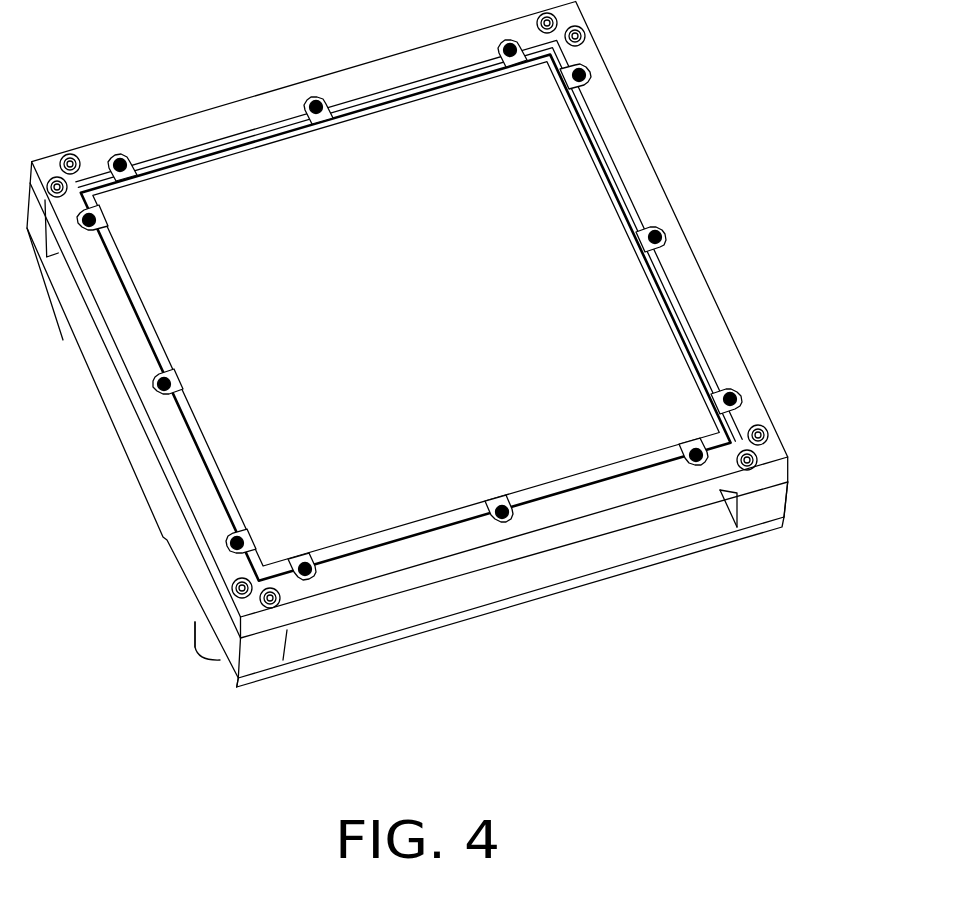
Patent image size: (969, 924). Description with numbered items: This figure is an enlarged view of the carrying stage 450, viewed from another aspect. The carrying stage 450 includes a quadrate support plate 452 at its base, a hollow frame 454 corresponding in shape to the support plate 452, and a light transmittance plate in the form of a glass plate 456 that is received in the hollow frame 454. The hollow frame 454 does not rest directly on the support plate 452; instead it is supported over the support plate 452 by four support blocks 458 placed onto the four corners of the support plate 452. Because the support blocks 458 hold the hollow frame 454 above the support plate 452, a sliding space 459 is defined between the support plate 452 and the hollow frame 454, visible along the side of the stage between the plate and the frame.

The carrying stage 450 is at (458, 345).
The support plate 452 is at (458, 424).
The hollow frame 454 is at (432, 320).
The glass plate 456 is at (555, 162).
The support blocks 458 is at (765, 502).
The sliding space 459 is at (668, 527).